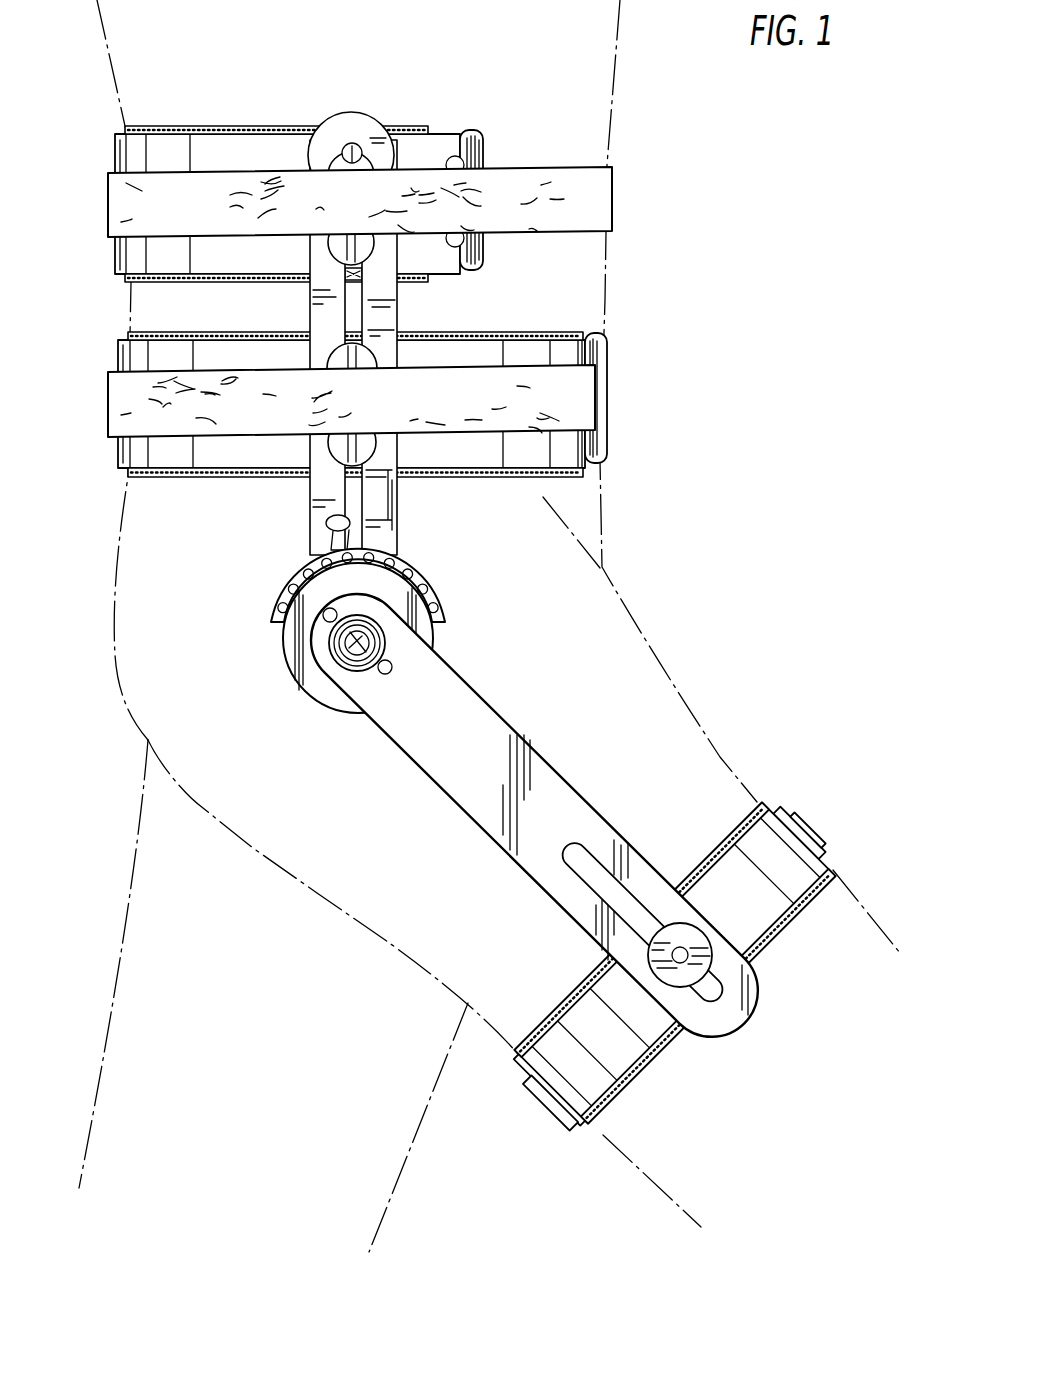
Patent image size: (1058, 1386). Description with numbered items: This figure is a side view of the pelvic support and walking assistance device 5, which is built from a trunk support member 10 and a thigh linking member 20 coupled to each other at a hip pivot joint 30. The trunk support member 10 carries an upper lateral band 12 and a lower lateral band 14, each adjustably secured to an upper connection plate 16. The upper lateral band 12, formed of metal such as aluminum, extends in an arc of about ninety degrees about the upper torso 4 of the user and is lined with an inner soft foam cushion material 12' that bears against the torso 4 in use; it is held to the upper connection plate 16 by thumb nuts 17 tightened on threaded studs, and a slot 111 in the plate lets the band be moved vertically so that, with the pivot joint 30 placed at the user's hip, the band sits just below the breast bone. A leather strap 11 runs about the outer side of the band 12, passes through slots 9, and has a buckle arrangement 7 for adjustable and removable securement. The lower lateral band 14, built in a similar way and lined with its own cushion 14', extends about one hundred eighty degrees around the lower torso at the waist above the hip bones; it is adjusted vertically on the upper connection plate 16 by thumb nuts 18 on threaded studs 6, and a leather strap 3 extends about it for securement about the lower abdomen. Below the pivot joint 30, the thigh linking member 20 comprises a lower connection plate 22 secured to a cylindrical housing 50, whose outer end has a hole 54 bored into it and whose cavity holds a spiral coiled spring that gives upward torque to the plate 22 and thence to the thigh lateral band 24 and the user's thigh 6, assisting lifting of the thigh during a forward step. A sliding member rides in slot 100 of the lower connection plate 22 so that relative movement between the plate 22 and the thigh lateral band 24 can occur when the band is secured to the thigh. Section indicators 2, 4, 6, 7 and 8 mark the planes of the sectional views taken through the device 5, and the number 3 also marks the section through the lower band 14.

The section line 2- 2 is at (352, 487).
The leather strap 3 is at (578, 398).
The torso 4 is at (98, 95).
The pelvic support and walking assistance device 5 is at (673, 457).
The thigh 6 is at (773, 742).
The buckle arrangement 7 is at (627, 906).
The section line 8- 8 is at (350, 90).
The slots 9 is at (464, 162).
The trunk support member 10 is at (553, 297).
The leather strap 11 is at (536, 183).
The upper lateral band 12 is at (299, 171).
The inner soft foam cushion material 12' is at (276, 179).
The lower lateral band 14 is at (351, 374).
The lower cuff liner 14' is at (362, 385).
The upper connection plate 16 is at (383, 345).
The thumb nuts 17 is at (364, 165).
The thumb nuts 18 is at (340, 358).
The thigh linking member 20 is at (580, 730).
The lower connection plate 22 is at (497, 727).
The thigh lateral band 24 is at (795, 862).
The pivot joint 30 is at (454, 632).
The cylindrical housing 50 is at (323, 693).
The hole 54 is at (333, 647).
The slot 100 is at (577, 852).
The slot 111 is at (349, 148).